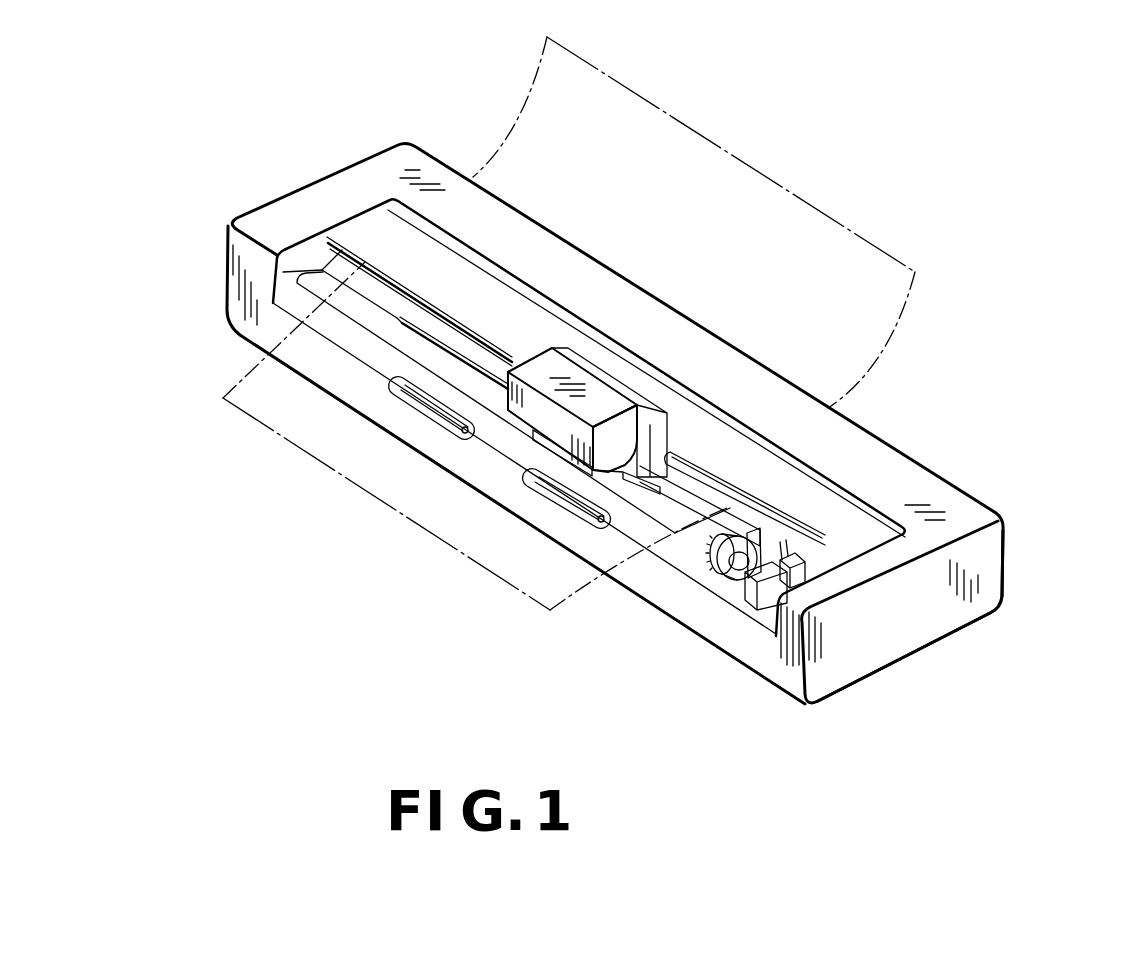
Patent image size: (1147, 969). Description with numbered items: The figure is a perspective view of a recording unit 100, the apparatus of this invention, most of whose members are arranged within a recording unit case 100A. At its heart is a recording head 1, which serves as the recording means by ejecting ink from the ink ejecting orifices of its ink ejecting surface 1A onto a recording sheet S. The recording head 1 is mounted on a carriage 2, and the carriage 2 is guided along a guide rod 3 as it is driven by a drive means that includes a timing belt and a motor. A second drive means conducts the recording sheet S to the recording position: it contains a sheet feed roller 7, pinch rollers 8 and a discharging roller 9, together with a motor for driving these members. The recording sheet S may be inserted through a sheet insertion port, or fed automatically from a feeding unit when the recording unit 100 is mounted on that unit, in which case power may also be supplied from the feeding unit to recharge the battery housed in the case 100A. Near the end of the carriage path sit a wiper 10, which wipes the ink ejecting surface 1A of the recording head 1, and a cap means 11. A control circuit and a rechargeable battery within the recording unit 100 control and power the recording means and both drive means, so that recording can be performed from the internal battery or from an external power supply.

The recording unit 100 is at (445, 134).
The recording unit case 100A is at (988, 561).
The recording sheet S is at (753, 178).
The recording head 1 is at (580, 377).
The ink ejecting surface 1A is at (620, 463).
The carriage 2 is at (672, 423).
The guide rod 3 is at (353, 252).
The sheet feed roller 7 is at (376, 325).
The pinch rollers 8 is at (417, 338).
The discharging roller 9 is at (430, 413).
The wiper 10 is at (755, 533).
The cap means 11 is at (782, 560).